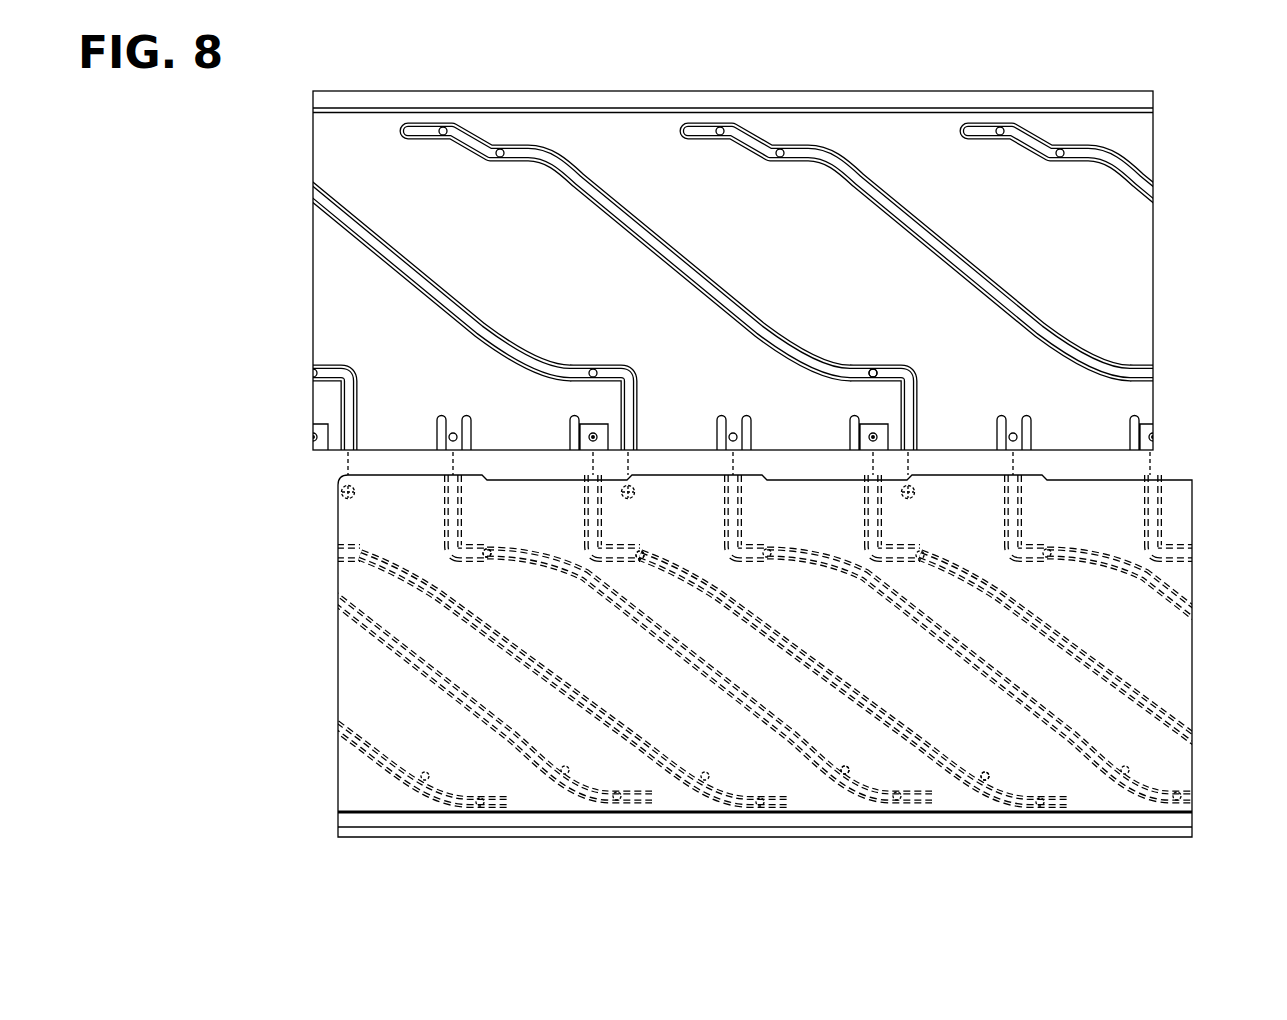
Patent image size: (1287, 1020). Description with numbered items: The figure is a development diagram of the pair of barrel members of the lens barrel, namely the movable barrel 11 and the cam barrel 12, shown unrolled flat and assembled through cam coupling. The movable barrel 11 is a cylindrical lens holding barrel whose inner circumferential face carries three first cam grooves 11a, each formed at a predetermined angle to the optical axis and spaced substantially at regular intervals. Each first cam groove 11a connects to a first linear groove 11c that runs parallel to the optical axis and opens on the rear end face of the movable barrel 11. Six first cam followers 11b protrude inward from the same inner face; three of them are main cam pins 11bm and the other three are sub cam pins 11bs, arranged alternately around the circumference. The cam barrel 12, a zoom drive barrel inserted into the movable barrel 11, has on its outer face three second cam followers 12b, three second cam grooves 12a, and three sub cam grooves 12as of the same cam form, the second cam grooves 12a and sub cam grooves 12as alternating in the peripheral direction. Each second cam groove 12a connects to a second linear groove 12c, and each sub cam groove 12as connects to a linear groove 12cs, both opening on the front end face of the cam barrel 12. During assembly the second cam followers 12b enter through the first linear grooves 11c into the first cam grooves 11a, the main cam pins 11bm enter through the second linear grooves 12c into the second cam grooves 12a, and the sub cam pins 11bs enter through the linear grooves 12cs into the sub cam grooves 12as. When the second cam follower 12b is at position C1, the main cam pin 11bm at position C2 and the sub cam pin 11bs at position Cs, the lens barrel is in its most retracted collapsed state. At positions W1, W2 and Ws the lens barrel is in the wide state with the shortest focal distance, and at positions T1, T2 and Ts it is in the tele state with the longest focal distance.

The movable barrel 11 is at (1182, 115).
The first cam groove 11a is at (392, 257).
The first cam follower 11b is at (518, 382).
The first linear groove 11c is at (338, 402).
The sub cam pin 11bs is at (309, 437).
The main cam pin 11bm is at (593, 432).
The cam barrel 12 is at (1222, 500).
The second cam groove 12a is at (462, 611).
The sub cam groove 12as is at (432, 700).
The second cam follower 12b is at (490, 160).
The second linear groove 12c is at (601, 520).
The linear groove 12cs is at (461, 520).
The collapsed position in first cam groove C1 is at (443, 117).
The wide position in first cam groove W1 is at (500, 140).
The tele position in first cam groove T1 is at (873, 356).
The tele position in sub cam groove Ts is at (487, 562).
The tele position in second cam groove T2 is at (638, 565).
The wide position in sub cam groove Ws is at (845, 782).
The collapsed position in sub cam groove Cs is at (897, 811).
The wide position in second cam groove W2 is at (985, 804).
The collapsed position in second cam groove C2 is at (1037, 814).